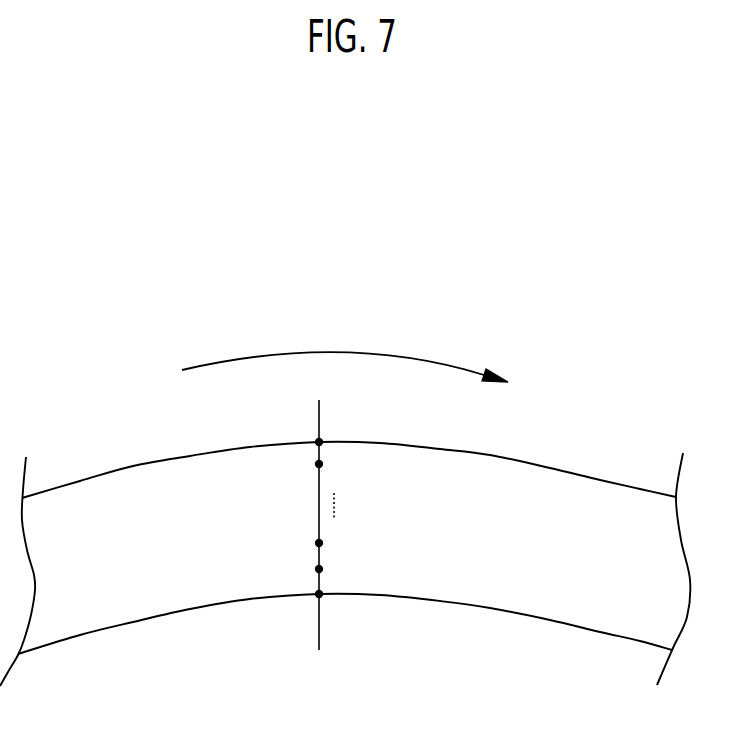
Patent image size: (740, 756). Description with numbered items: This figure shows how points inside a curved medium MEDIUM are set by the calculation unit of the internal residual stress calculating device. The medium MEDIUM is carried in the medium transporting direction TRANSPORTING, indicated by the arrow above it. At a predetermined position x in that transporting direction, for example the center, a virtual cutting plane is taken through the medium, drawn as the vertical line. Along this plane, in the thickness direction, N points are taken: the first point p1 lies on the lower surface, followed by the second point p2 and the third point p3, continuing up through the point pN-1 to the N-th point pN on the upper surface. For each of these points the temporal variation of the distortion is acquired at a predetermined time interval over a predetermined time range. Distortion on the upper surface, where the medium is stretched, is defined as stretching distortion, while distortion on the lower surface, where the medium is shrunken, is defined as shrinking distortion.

The medium MEDIUM is at (581, 660).
The medium transporting direction TRANSPORTING is at (345, 348).
The predetermined position X x is at (327, 541).
The point pN is at (339, 425).
The point pN-1 is at (350, 469).
The point p3 is at (337, 540).
The point p2 is at (337, 569).
The point p1 is at (337, 607).